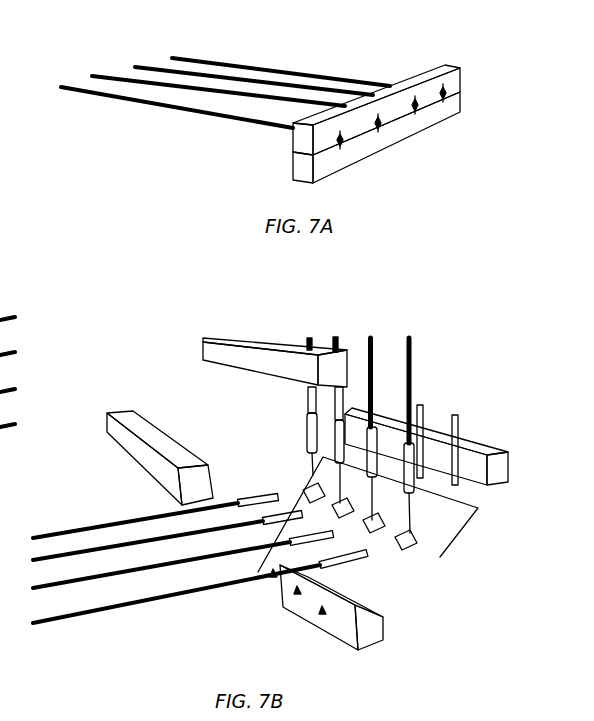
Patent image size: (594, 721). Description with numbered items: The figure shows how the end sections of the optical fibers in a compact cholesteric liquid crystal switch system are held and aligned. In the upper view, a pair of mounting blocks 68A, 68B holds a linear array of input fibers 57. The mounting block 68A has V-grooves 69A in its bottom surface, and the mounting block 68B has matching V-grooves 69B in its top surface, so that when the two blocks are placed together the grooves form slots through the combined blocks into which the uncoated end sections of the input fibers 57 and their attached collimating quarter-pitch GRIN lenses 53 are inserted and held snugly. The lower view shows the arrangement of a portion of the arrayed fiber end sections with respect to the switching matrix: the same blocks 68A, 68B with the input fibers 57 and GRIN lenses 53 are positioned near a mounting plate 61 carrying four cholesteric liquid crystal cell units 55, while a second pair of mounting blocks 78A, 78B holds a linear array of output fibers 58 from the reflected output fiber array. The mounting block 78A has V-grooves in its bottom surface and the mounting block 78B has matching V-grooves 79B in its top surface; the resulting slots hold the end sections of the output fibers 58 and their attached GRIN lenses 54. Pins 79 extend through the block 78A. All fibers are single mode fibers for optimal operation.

In FIG. 7A, the collimating quarter-pitch GRIN lens 53 is at (378, 118).
In FIG. 7B, the collimating quarter-pitch GRIN lens 53 is at (288, 515).
In FIG. 7B, the collimating quarter-pitch GRIN lens 54 is at (376, 465).
In FIG. 7B, the cholesteric liquid crystal cell unit 55 is at (400, 558).
In FIG. 7A, the input fiber 57 is at (250, 110).
In FIG. 7B, the input fiber 57 is at (82, 608).
In FIG. 7B, the output fiber 58 is at (348, 405).
In FIG. 7B, the mounting plate 61 is at (381, 523).
In FIG. 7A, the mounting block 68A is at (455, 78).
In FIG. 7B, the mounting block 68A is at (161, 444).
In FIG. 7A, the mounting block 68B is at (455, 100).
In FIG. 7B, the mounting block 68B is at (364, 622).
In FIG. 7A, the V-groove 69A is at (340, 150).
In FIG. 7A, the V-groove 69B is at (415, 116).
In FIG. 7B, the V-groove 69B is at (322, 612).
In FIG. 7B, the mounting block 78A is at (231, 355).
In FIG. 7B, the mounting block 78B is at (455, 446).
In FIG. 7B, the upper pin 79 is at (285, 342).
In FIG. 7B, the V-groove 79B is at (420, 430).